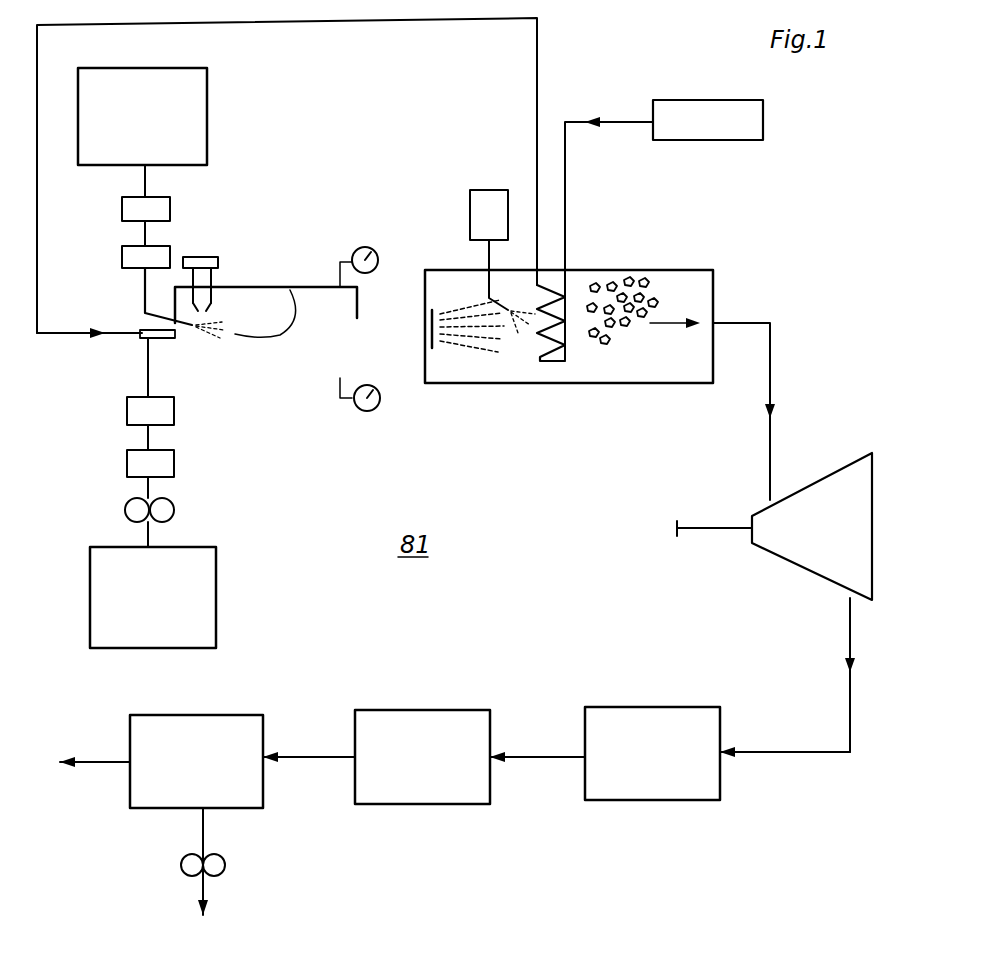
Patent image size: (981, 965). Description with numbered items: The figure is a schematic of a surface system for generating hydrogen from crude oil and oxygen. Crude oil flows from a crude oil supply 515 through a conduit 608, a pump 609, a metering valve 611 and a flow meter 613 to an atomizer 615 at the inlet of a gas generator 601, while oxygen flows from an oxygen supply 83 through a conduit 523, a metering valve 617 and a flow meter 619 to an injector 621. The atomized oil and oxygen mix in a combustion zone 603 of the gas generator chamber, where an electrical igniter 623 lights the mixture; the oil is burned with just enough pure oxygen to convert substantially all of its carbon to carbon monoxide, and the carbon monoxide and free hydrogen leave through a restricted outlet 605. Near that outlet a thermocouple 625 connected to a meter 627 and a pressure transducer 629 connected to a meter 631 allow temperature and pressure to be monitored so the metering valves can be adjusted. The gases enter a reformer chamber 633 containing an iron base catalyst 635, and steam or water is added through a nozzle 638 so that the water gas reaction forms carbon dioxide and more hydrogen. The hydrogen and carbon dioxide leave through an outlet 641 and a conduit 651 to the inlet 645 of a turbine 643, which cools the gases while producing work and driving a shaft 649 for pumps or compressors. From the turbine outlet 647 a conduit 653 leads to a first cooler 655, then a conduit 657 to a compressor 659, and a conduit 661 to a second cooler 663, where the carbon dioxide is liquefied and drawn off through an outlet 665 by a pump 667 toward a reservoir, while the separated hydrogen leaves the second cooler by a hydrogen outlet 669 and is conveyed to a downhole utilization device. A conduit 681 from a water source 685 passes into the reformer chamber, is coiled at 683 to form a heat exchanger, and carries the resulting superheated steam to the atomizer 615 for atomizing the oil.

The oxygen supply 83 is at (207, 105).
The crude oil supply 515 is at (148, 650).
The conduit 523 is at (147, 180).
The gas generator 601 is at (263, 378).
The combustion zone 603 is at (290, 290).
The restricted outlet 605 is at (395, 350).
The conduit 608 is at (146, 531).
The pump 609 is at (174, 510).
The metering valve 611 is at (127, 463).
The flow meter 613 is at (127, 412).
The atomizer 615 is at (142, 340).
The metering valve 617 is at (122, 209).
The flow meter 619 is at (122, 258).
The injector 621 is at (143, 318).
The electrical igniter 623 is at (200, 258).
The thermocouple 625 is at (328, 285).
The meter 627 is at (365, 245).
The pressure transducer 629 is at (338, 370).
The meter 631 is at (365, 412).
The reformer chamber 633 is at (648, 383).
The iron base catalyst 635 is at (606, 286).
The nozzle 638 is at (495, 293).
The outlet 641 is at (716, 322).
The turbine 643 is at (860, 453).
The inlet 645 is at (758, 505).
The outlet 647 is at (848, 610).
The shaft 649 is at (710, 530).
The conduit 651 is at (771, 350).
The conduit 653 is at (850, 720).
The first cooler 655 is at (663, 800).
The conduit 657 is at (545, 760).
The compressor 659 is at (423, 710).
The conduit 661 is at (318, 760).
The second cooler 663 is at (195, 715).
The outlet 665 is at (203, 833).
The pump 667 is at (225, 866).
The output 669 is at (125, 760).
The conduit 681 is at (540, 67).
The coil 683 is at (545, 345).
The source 685 is at (714, 100).